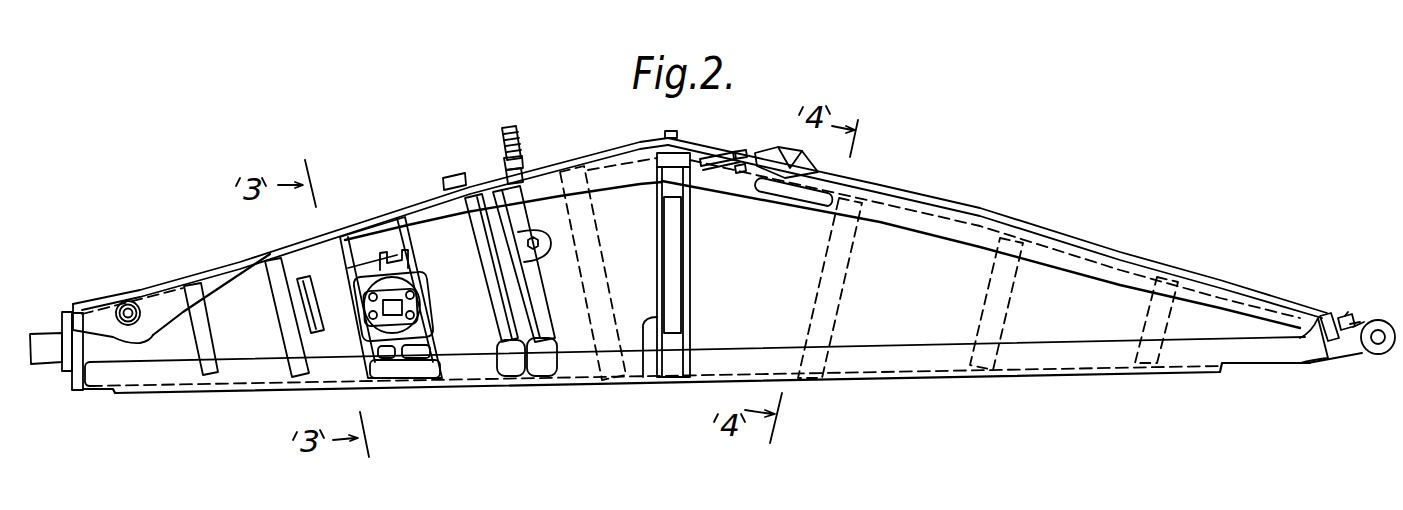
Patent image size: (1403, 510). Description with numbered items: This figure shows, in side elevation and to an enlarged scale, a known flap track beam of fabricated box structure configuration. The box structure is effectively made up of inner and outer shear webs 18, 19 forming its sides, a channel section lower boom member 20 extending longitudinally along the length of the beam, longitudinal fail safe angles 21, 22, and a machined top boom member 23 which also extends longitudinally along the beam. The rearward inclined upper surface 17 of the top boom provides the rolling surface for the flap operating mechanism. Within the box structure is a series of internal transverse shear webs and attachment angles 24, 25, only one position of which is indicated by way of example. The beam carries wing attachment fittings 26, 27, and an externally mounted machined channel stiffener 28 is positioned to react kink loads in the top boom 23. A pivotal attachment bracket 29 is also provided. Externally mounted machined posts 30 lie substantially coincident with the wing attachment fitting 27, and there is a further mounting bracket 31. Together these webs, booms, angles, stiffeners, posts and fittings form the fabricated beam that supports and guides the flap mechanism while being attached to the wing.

The rearward inclined upper surface 17 is at (973, 212).
The inner shear web 18 is at (708, 207).
The outer shear web 19 is at (724, 167).
The channel section lower boom member 20 is at (705, 363).
The longitudinal fail safe angle 21 is at (1010, 347).
The longitudinal fail safe angle 22 is at (1156, 320).
The machined top boom member 23 is at (880, 218).
The internal transverse shear web 24 is at (820, 304).
The attachment angle 25 is at (808, 278).
The wing attachment fitting 26 is at (57, 312).
The wing attachment fitting 27 is at (528, 153).
The externally mounted machined channel stiffener 28 is at (649, 355).
The pivotal attachment bracket 29 is at (1353, 343).
The externally mounted machined post 30 is at (522, 355).
The mounting bracket 31 is at (443, 349).